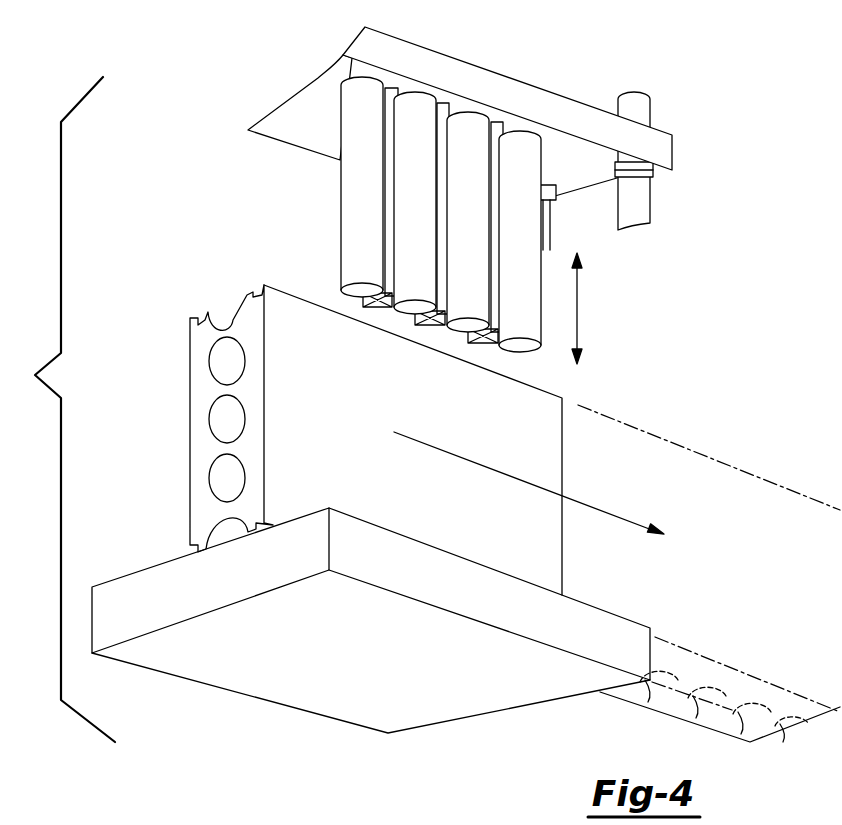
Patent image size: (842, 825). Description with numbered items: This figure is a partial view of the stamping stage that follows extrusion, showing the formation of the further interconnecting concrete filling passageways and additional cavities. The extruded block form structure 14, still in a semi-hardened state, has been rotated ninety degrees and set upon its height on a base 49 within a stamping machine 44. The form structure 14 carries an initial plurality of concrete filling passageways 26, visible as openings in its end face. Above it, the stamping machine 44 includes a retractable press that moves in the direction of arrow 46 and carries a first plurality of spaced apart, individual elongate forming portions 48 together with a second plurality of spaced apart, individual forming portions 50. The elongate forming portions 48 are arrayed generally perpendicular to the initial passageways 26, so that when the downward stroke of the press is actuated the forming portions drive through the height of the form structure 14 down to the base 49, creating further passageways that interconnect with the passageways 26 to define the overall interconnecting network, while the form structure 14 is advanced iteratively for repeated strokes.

The form structure 14 is at (205, 513).
The concrete filling passageways 26 is at (227, 487).
The stamping machine 44 is at (672, 148).
The arrow 46 is at (577, 307).
The elongate forming portions 48 is at (430, 220).
The base 49 is at (210, 590).
The forming portions 50 is at (407, 117).